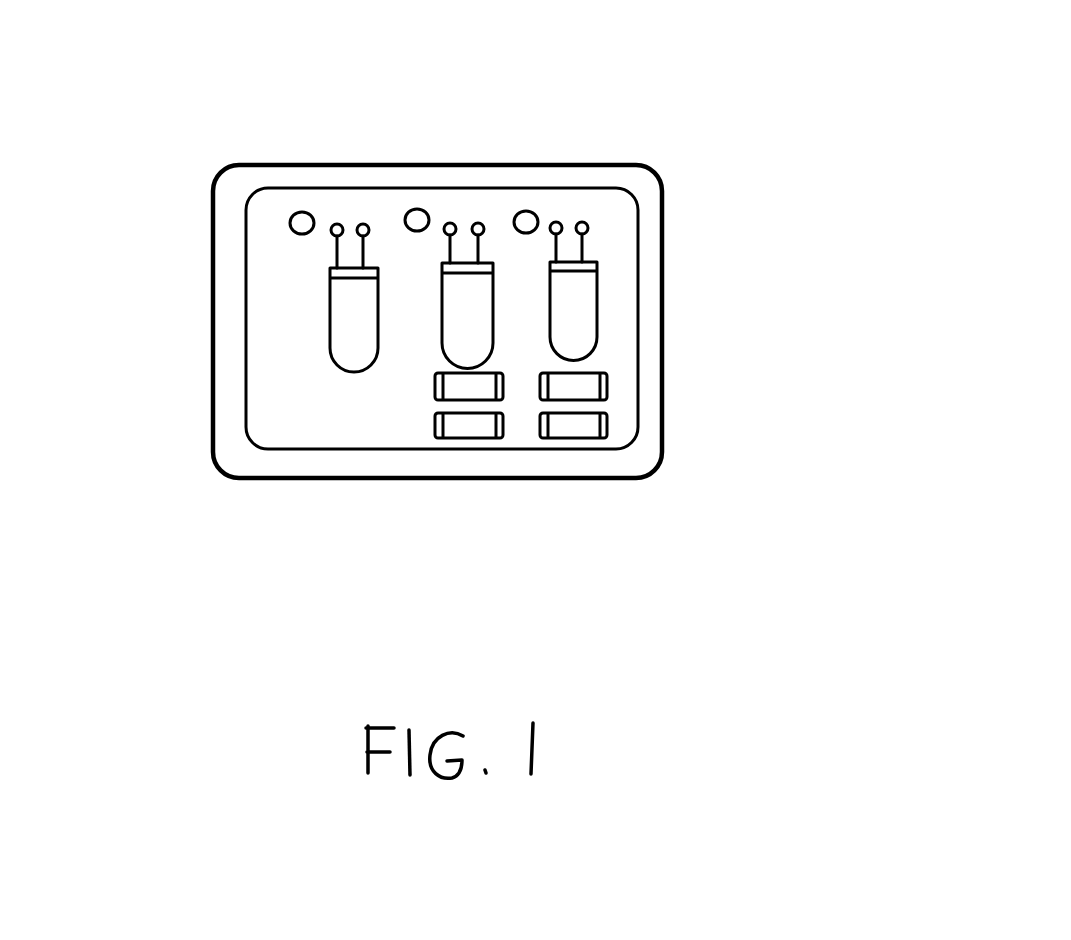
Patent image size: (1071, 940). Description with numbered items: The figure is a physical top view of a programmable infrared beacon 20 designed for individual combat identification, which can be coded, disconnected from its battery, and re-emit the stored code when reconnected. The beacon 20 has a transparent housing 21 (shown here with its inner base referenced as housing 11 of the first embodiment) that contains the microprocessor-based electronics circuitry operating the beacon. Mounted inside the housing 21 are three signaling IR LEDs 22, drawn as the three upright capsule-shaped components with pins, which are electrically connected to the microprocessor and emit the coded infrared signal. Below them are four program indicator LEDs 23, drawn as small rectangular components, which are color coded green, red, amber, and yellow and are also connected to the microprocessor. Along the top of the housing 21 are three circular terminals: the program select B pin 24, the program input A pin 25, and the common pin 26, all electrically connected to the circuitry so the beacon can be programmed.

The beacon circuit embodiment 20 is at (790, 138).
The transparent housing 21 is at (212, 216).
The transparent housing 11 is at (212, 420).
The signaling IR LEDs 22 is at (343, 318).
The program indicator LEDs 23 is at (613, 388).
The program select B pin 24 is at (303, 211).
The program input A pin 25 is at (528, 210).
The common pin 26 is at (418, 208).